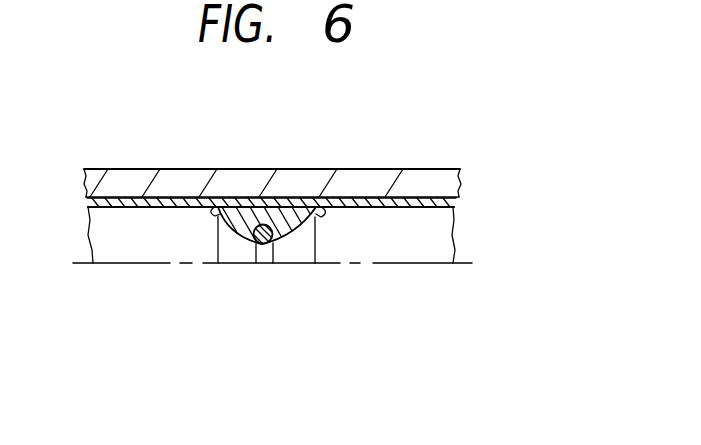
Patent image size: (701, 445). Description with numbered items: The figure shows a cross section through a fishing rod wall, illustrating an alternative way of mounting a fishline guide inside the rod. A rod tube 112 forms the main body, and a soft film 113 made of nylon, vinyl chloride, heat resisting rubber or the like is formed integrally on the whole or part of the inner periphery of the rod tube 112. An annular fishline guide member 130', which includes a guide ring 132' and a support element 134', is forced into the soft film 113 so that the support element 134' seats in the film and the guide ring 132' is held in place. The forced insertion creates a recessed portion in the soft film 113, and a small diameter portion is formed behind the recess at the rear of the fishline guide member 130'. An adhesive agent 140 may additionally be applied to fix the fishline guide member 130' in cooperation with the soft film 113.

The rod tube 112 is at (380, 182).
The soft film 113 is at (152, 203).
The adhesive agent 140 is at (317, 211).
The annular fishline guide member 130' is at (277, 295).
The guide ring 132' is at (245, 278).
The support element 134' is at (275, 269).